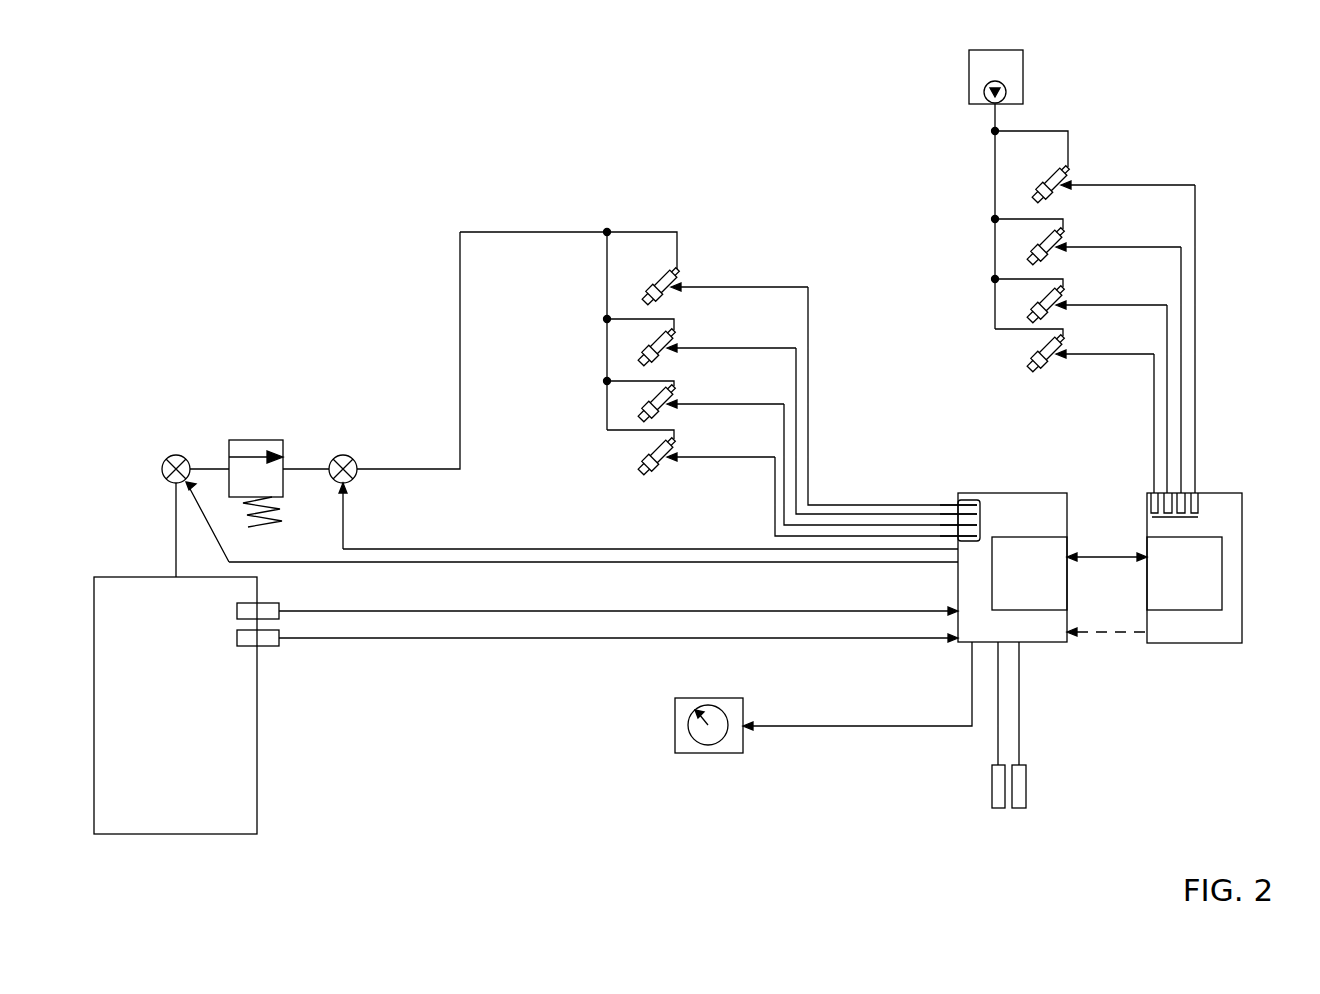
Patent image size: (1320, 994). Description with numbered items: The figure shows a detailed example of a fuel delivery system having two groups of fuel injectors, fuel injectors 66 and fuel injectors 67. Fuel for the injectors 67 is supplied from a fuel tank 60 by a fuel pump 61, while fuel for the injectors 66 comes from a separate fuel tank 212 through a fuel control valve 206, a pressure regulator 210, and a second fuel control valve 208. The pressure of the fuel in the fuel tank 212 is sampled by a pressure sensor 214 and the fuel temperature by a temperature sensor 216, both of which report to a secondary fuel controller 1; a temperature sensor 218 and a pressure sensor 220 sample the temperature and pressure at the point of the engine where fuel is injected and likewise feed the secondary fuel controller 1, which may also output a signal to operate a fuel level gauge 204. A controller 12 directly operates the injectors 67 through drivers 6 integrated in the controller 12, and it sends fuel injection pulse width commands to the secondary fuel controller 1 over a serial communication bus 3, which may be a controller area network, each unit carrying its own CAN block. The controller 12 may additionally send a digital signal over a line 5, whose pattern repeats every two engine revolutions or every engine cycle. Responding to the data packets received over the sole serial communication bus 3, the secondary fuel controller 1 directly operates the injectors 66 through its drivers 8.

The secondary fuel controller 1 is at (1027, 643).
The serial communication bus 3 is at (1111, 554).
The line 5 is at (1118, 630).
The drivers 6 is at (1173, 519).
The drivers 8 is at (982, 520).
The controller 12 is at (1180, 643).
The fuel tank 60 is at (969, 77).
The fuel pump 61 is at (986, 104).
The fuel injectors 66 is at (658, 277).
The fuel injectors 67 is at (1041, 178).
The fuel level gauge 204 is at (675, 698).
The fuel control valve 206 is at (163, 465).
The fuel control valve 208 is at (348, 456).
The pressure regulator 210 is at (252, 440).
The fuel tank 212 is at (257, 769).
The pressure sensor 214 is at (268, 603).
The temperature sensor 216 is at (266, 646).
The temperature sensor 218 is at (990, 777).
The pressure sensor 220 is at (1027, 767).